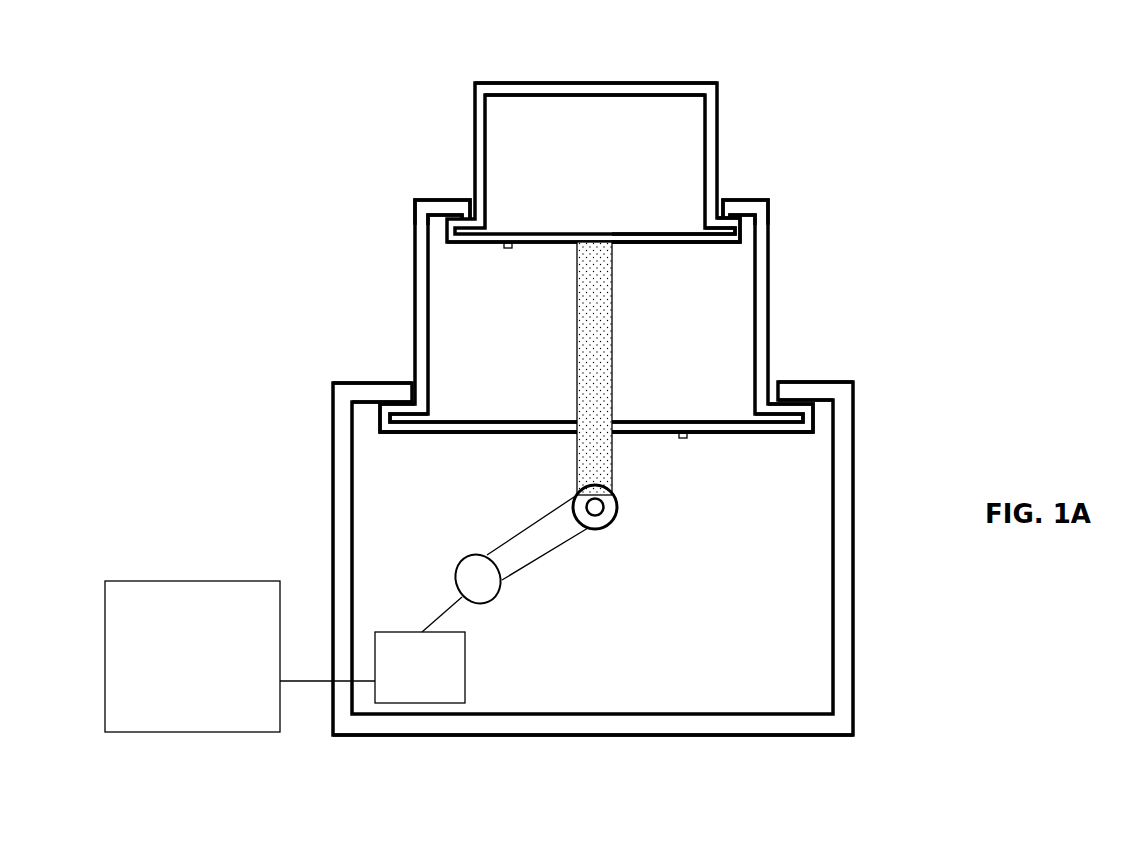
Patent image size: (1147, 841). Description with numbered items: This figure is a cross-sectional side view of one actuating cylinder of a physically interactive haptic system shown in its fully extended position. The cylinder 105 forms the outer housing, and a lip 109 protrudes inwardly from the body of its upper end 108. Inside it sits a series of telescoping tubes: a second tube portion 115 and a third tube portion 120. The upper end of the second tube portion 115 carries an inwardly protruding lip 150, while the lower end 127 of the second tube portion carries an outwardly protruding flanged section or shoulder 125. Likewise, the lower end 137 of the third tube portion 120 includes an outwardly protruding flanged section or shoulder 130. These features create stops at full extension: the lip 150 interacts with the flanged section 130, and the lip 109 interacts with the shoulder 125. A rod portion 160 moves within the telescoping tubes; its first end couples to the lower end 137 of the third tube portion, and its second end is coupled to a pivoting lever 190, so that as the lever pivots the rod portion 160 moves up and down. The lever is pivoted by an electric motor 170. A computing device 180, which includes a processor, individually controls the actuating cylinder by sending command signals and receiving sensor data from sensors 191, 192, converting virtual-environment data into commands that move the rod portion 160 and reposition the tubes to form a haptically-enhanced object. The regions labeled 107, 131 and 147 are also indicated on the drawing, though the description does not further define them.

The cylinder 105 is at (853, 600).
The bottom of outer chamber 107 is at (868, 715).
The upper end of the cylinder 108 is at (840, 370).
The lip of the cylinder 109 is at (380, 380).
The second tube portion 115 is at (770, 308).
The third tube portion 120 is at (718, 142).
The flanged section or shoulder of the second tube portion 125 is at (805, 418).
The lower end of the second tube section 127 is at (782, 442).
The flanged section or shoulder of the third tube portion 130 is at (742, 233).
The top rim of inner chamber 131 is at (755, 190).
The lower end of the third tube portion 137 is at (705, 248).
The top of lid 147 is at (657, 77).
The lip of the second tube portion 150 is at (433, 200).
The rod portion 160 is at (615, 380).
The electric motor 170 is at (465, 668).
The computing device 180 is at (192, 580).
The pivoting lever 190 is at (553, 552).
The sensor 191 is at (508, 248).
The sensor 192 is at (683, 438).